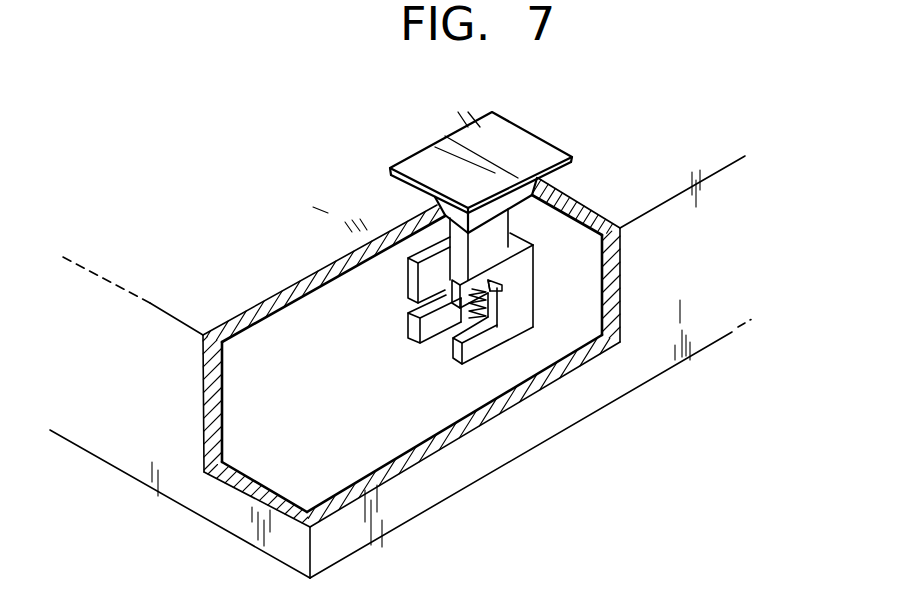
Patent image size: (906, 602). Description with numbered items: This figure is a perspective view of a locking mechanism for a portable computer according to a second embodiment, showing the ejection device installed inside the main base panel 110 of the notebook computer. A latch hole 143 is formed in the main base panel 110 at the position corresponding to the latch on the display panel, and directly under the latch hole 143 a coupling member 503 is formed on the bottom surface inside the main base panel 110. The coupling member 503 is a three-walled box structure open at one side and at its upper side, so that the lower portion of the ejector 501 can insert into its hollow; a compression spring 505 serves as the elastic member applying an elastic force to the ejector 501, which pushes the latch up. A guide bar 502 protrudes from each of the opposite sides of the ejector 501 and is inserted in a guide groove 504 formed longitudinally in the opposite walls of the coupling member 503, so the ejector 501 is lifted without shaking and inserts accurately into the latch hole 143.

The main base panel 110 is at (703, 318).
The latch hole 143 is at (423, 152).
The ejector 501 is at (482, 177).
The guide bar 502 is at (536, 310).
The coupling member 503 is at (503, 295).
The guide groove 504 is at (470, 315).
The compression spring 505 is at (463, 322).